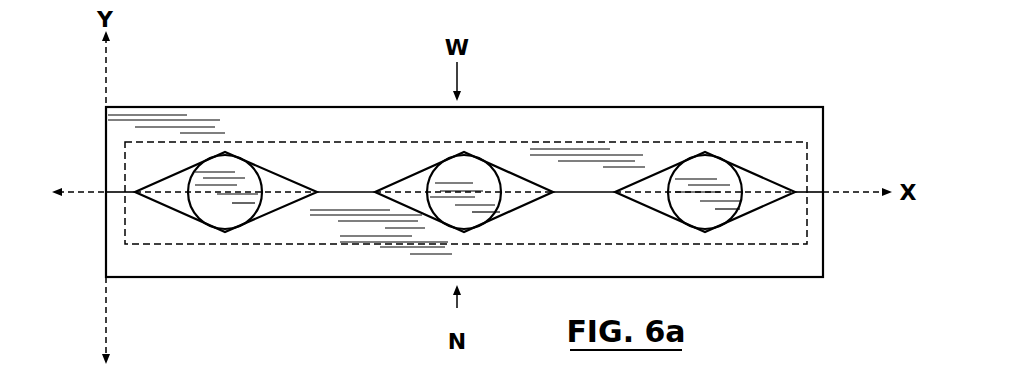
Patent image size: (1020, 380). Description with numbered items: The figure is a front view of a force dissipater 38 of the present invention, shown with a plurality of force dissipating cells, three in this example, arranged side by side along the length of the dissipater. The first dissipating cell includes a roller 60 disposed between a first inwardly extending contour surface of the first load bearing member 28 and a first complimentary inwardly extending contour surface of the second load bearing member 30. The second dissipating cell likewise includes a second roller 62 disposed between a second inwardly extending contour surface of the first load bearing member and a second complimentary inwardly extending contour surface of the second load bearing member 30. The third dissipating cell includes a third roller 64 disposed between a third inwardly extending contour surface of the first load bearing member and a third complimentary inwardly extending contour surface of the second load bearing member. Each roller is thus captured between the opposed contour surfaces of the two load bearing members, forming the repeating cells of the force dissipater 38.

The first load bearing member 28 is at (823, 107).
The second load bearing member 30 is at (823, 277).
The force dissipater 38 is at (653, 142).
The roller 60 is at (258, 181).
The second roller 62 is at (497, 178).
The third roller 64 is at (737, 185).